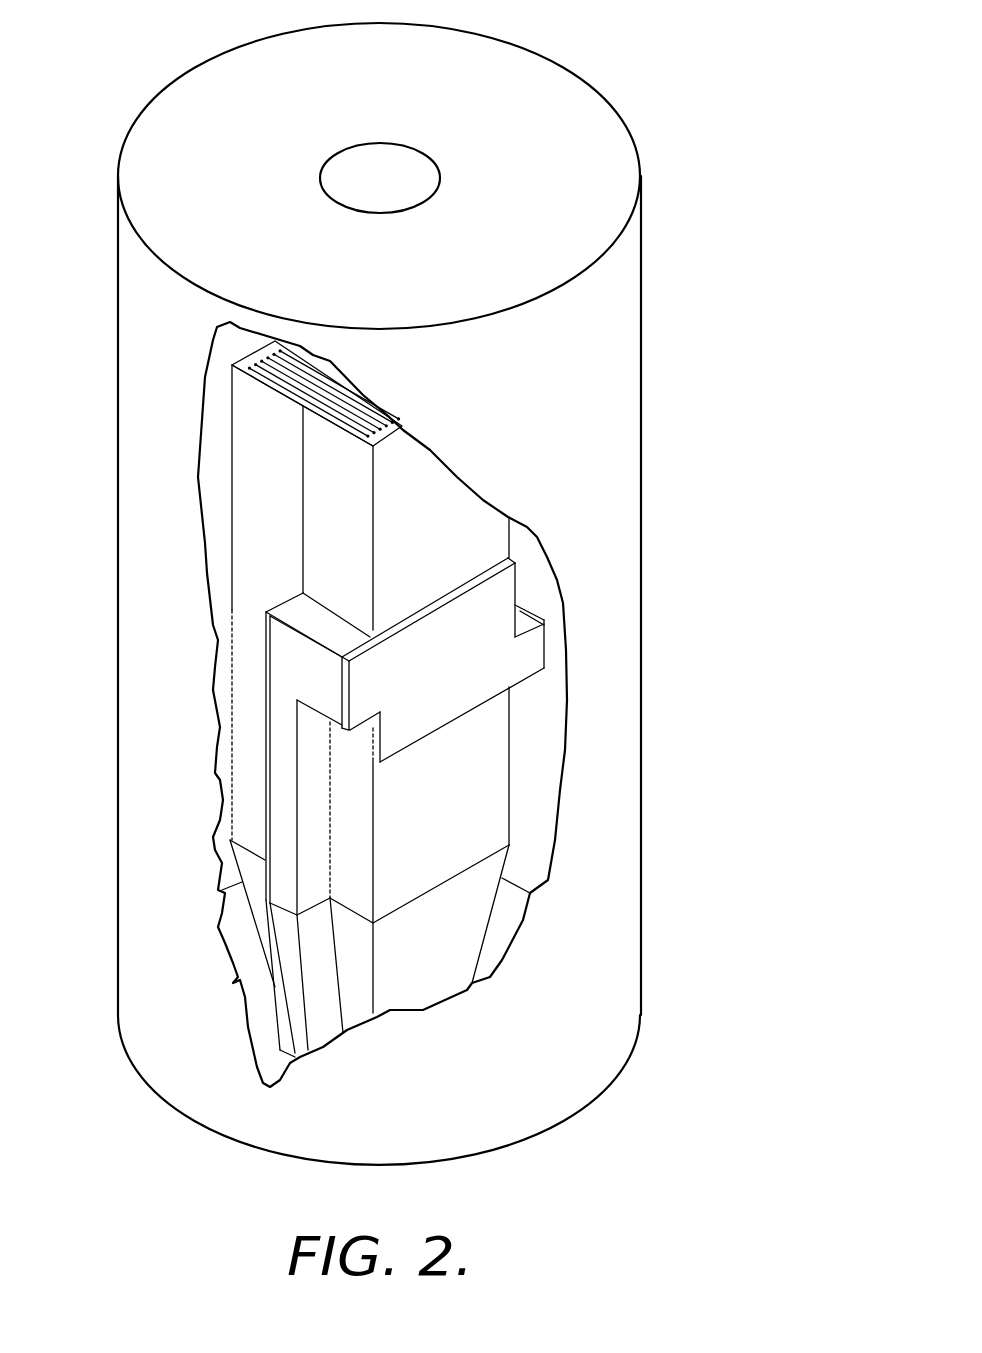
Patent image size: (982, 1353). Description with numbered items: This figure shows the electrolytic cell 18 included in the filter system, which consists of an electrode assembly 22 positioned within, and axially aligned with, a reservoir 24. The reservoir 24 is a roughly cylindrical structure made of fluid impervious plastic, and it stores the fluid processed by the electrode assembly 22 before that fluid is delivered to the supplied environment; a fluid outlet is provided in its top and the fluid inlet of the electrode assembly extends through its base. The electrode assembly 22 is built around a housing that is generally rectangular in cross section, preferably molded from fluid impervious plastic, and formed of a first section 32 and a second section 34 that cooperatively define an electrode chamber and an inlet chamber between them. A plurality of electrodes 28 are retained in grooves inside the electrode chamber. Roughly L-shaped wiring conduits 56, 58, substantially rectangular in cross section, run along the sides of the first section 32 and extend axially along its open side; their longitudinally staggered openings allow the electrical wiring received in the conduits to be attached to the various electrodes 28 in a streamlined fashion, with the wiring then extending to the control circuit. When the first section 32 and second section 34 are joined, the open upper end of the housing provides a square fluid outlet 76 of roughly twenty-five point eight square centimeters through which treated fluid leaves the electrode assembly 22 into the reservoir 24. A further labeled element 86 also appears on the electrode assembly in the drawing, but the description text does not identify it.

The electrolytic cell 18 is at (104, 1183).
The electrode assembly 22 is at (224, 469).
The reservoir 24 is at (114, 277).
The electrodes 28 is at (245, 368).
The first section 32 is at (463, 777).
The second section 34 is at (258, 546).
The wiring conduit 56 is at (297, 668).
The wiring conduit 58 is at (540, 608).
The fluid outlet 76 is at (320, 416).
The mounting plate 86 is at (478, 651).